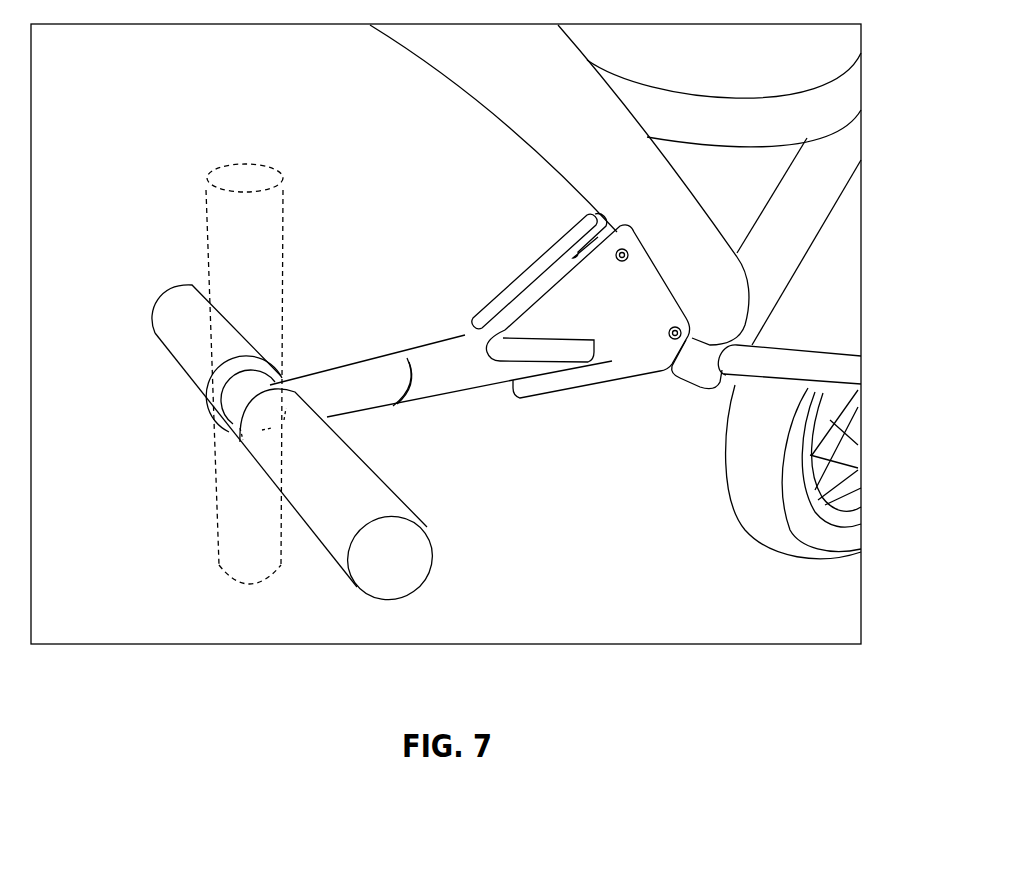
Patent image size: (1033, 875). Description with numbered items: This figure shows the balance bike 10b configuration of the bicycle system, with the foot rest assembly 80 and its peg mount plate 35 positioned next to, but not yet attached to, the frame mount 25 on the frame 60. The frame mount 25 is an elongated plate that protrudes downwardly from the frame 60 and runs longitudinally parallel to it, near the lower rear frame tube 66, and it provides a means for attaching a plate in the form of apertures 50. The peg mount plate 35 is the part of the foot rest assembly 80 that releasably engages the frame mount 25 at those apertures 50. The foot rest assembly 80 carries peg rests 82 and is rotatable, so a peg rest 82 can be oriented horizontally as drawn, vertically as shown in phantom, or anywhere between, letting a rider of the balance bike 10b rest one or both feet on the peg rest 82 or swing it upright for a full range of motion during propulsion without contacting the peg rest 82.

The balance bike 10b is at (160, 146).
The frame mount 25 is at (592, 232).
The peg mount plate 35 is at (566, 326).
The apertures 50 is at (622, 261).
The frame 60 is at (670, 242).
The lower rear frame tube 66 is at (770, 241).
The foot rest assembly 80 is at (250, 367).
The peg rest 82 is at (323, 492).